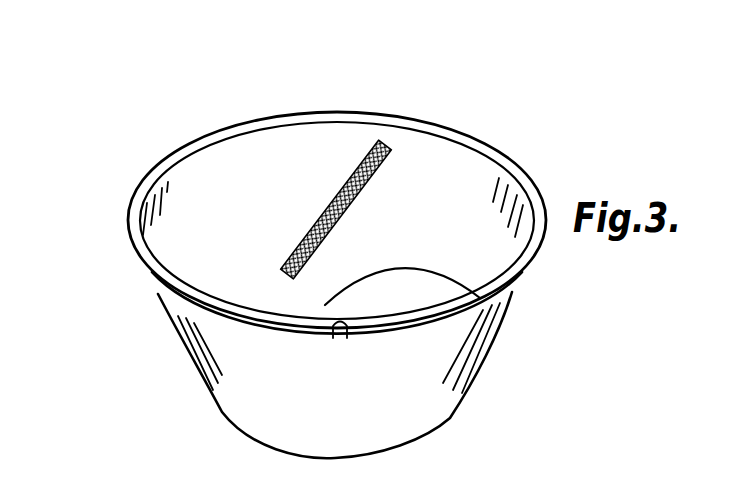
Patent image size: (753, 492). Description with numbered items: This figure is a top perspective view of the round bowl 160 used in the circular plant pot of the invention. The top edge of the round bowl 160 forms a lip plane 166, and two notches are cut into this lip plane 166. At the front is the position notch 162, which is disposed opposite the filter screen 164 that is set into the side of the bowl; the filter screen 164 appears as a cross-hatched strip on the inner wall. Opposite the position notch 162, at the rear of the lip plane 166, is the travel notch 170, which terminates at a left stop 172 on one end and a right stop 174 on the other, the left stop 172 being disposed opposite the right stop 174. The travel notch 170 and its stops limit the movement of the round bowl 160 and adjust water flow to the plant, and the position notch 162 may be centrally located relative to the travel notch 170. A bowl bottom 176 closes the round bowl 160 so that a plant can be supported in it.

The round bowl 160 is at (154, 128).
The position notch 162 is at (338, 340).
The filter screen 164 is at (322, 207).
The lip plane 166 is at (127, 221).
The travel notch 170 is at (331, 116).
The left stop 172 is at (266, 118).
The right stop 174 is at (393, 117).
The bowl bottom 176 is at (489, 297).